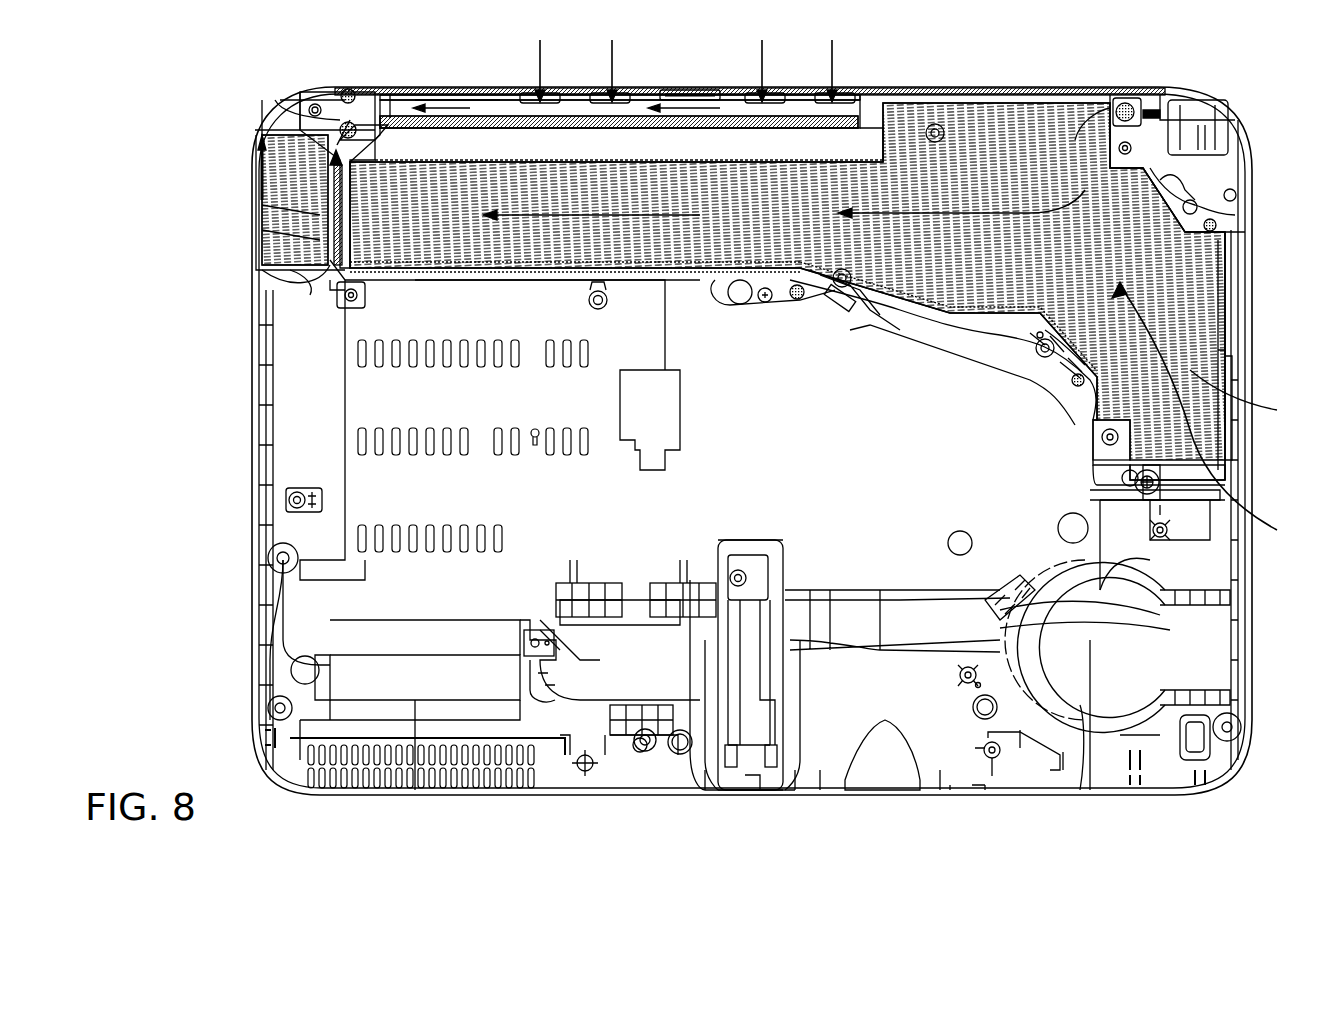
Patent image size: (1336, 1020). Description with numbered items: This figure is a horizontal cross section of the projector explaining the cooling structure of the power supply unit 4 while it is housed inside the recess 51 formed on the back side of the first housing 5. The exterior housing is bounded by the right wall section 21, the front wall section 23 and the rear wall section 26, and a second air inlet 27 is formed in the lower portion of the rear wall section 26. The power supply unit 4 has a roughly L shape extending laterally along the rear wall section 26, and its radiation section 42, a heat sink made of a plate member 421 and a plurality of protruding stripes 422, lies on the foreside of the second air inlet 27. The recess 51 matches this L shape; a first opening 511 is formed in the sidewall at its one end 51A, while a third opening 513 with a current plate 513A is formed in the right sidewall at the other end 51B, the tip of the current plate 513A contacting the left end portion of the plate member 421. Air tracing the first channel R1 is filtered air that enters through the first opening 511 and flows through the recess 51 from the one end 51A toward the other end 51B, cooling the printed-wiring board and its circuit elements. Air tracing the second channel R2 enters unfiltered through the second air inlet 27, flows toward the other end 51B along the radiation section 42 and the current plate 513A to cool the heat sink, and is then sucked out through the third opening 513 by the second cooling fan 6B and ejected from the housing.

The power supply unit 4 is at (1037, 140).
The first housing 5 is at (1035, 808).
The right wall section 21 is at (1252, 660).
The front wall section 23 is at (892, 796).
The rear wall section 26 is at (1098, 87).
The second air inlet 27 is at (524, 86).
The radiation section 42 is at (965, 45).
The plate member 421 is at (862, 120).
The protruding stripes 422 is at (862, 98).
The recess 51 is at (940, 320).
The one end 51A is at (1232, 470).
The other end 51B is at (262, 228).
The first opening 511 is at (1240, 384).
The third opening 513 is at (348, 92).
The current plate 513A is at (378, 140).
The second cooling fan 6B is at (262, 205).
The first channel R1 is at (616, 210).
The second channel R2 is at (385, 96).